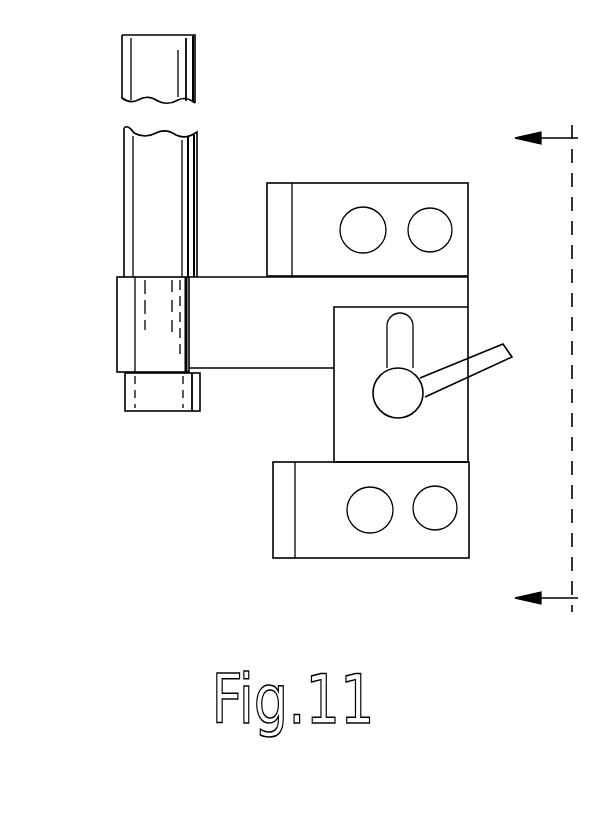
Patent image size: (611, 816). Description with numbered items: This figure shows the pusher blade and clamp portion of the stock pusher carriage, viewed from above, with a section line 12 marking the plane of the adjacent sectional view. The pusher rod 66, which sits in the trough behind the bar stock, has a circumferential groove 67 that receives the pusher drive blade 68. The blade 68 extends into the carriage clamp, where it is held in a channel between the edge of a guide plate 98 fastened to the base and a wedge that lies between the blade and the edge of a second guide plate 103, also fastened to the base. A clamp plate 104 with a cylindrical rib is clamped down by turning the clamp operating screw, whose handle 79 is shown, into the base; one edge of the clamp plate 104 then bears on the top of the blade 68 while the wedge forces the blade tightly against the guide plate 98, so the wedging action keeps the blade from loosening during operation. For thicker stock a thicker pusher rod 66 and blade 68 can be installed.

The section line 12 is at (554, 366).
The pusher rod 66 is at (152, 402).
The circumferential groove 67 is at (155, 333).
The pusher drive blade 68 is at (232, 358).
The handle 79 is at (487, 352).
The guide plate 98 is at (325, 200).
The guide plate 103 is at (384, 550).
The clamp plate 104 is at (445, 437).